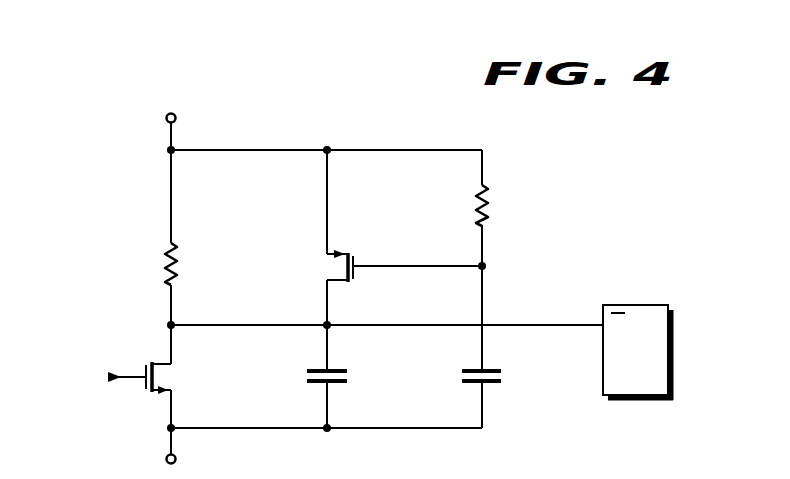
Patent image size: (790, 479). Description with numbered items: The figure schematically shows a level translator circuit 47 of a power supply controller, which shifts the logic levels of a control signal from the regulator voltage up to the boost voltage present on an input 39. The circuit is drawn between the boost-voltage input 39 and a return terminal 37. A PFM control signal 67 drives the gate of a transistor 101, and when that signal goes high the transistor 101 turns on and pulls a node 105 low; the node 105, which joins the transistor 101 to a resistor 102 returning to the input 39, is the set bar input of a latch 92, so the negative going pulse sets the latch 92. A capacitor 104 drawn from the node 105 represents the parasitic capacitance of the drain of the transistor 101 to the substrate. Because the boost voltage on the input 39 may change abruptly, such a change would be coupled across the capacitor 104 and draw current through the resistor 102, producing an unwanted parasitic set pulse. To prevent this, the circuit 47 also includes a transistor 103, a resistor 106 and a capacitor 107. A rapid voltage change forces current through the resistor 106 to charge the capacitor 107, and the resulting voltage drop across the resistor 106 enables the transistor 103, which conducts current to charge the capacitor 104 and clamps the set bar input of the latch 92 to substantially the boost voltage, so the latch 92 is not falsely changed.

The level translator circuit 47 is at (374, 99).
The input 39 is at (165, 117).
The ground terminal 37 is at (166, 460).
The resistor 102 is at (163, 264).
The node 105 is at (175, 322).
The transistor 101 is at (152, 359).
The PFM control signal 67 is at (106, 378).
The transistor 103 is at (324, 263).
The resistor 106 is at (495, 203).
The capacitor 104 is at (302, 375).
The capacitor 107 is at (457, 375).
The latch 92 is at (634, 304).